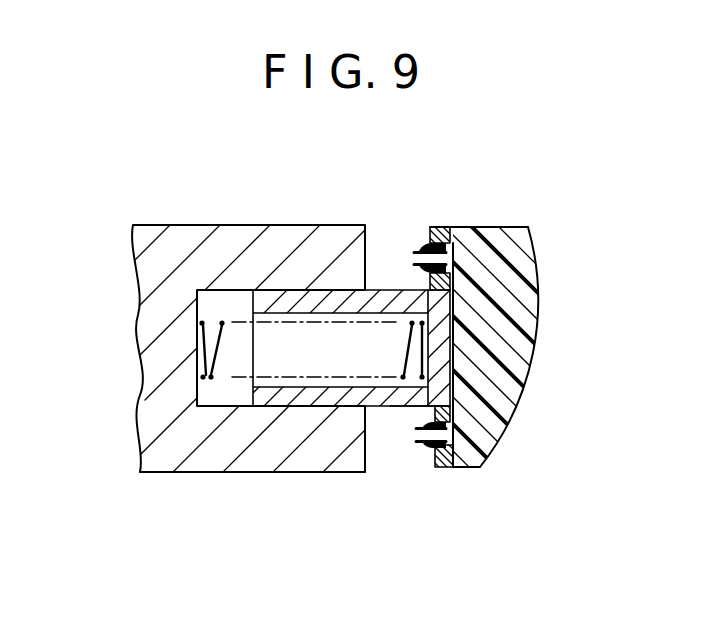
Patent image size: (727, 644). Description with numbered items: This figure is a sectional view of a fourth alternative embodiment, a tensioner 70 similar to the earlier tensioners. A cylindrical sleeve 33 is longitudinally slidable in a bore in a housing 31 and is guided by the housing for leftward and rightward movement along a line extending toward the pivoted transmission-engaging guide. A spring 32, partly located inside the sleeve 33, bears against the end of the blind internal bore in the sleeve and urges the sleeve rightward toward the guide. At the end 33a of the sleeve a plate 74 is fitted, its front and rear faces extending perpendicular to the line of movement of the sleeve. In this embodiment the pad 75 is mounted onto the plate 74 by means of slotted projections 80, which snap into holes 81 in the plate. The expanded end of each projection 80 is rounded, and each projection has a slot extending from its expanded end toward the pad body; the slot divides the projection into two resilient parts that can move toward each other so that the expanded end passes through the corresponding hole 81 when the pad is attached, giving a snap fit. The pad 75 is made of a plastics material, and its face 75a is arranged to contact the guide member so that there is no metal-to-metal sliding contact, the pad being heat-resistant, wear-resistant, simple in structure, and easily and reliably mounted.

The tensioner 70 is at (291, 211).
The housing 31 is at (160, 486).
The spring 32 is at (210, 380).
The cylindrical sleeve 33 is at (374, 430).
The end of the sleeve 33a is at (398, 408).
The plate 74 is at (460, 474).
The pad 75 is at (507, 216).
The face of the pad 75a is at (520, 397).
The slotted projections 80 is at (420, 247).
The holes 81 is at (453, 246).